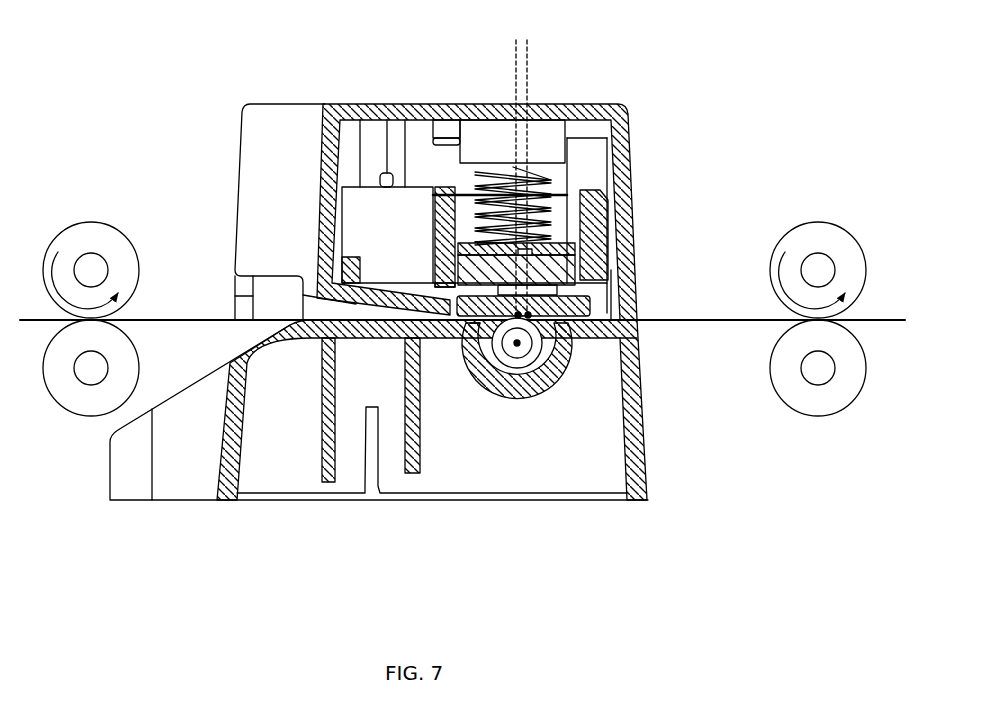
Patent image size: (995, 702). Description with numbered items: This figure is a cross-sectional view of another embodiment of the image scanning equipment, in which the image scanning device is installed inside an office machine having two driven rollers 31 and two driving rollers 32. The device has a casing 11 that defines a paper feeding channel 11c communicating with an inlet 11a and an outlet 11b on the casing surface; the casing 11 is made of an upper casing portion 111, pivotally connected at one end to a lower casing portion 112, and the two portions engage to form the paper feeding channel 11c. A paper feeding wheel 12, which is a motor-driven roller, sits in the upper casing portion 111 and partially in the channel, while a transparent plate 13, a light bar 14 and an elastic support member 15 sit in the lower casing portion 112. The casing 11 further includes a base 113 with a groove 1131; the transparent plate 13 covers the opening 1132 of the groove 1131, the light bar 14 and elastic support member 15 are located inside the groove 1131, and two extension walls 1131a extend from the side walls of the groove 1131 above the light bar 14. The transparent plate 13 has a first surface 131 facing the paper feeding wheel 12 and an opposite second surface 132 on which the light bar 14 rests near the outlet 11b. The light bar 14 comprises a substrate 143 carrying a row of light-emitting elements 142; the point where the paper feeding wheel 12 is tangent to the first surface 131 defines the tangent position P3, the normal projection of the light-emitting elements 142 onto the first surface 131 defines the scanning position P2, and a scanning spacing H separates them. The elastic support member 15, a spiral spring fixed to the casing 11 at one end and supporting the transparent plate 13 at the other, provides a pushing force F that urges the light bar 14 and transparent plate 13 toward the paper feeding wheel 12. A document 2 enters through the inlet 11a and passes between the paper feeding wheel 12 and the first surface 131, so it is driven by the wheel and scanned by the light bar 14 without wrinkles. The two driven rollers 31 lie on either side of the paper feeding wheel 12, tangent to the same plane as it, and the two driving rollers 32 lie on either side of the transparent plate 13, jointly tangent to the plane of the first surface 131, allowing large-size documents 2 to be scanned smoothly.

The document 2 is at (153, 318).
The casing 11 is at (379, 350).
The inlet 11a is at (265, 304).
The outlet 11b is at (622, 308).
The paper feeding channel 11c is at (627, 332).
The paper feeding wheel 12 is at (540, 352).
The transparent plate 13 is at (560, 348).
The light bar 14 is at (604, 242).
The elastic support member 15 is at (492, 175).
The driven rollers 31 is at (70, 403).
The driving rollers 32 is at (93, 233).
The upper casing portion 111 is at (298, 557).
The lower casing portion 112 is at (272, 257).
The base 113 is at (375, 110).
The first surface 131 is at (497, 332).
The second surface 132 is at (450, 180).
The light-emitting elements 142 is at (575, 262).
The substrate 143 is at (590, 226).
The groove 1131 is at (568, 220).
The extension walls 1131a is at (585, 318).
The opening 1132 is at (462, 327).
The scanning position P2 is at (528, 320).
The tangent position P3 is at (518, 320).
The scanning spacing H is at (558, 38).
The pushing force F is at (650, 146).